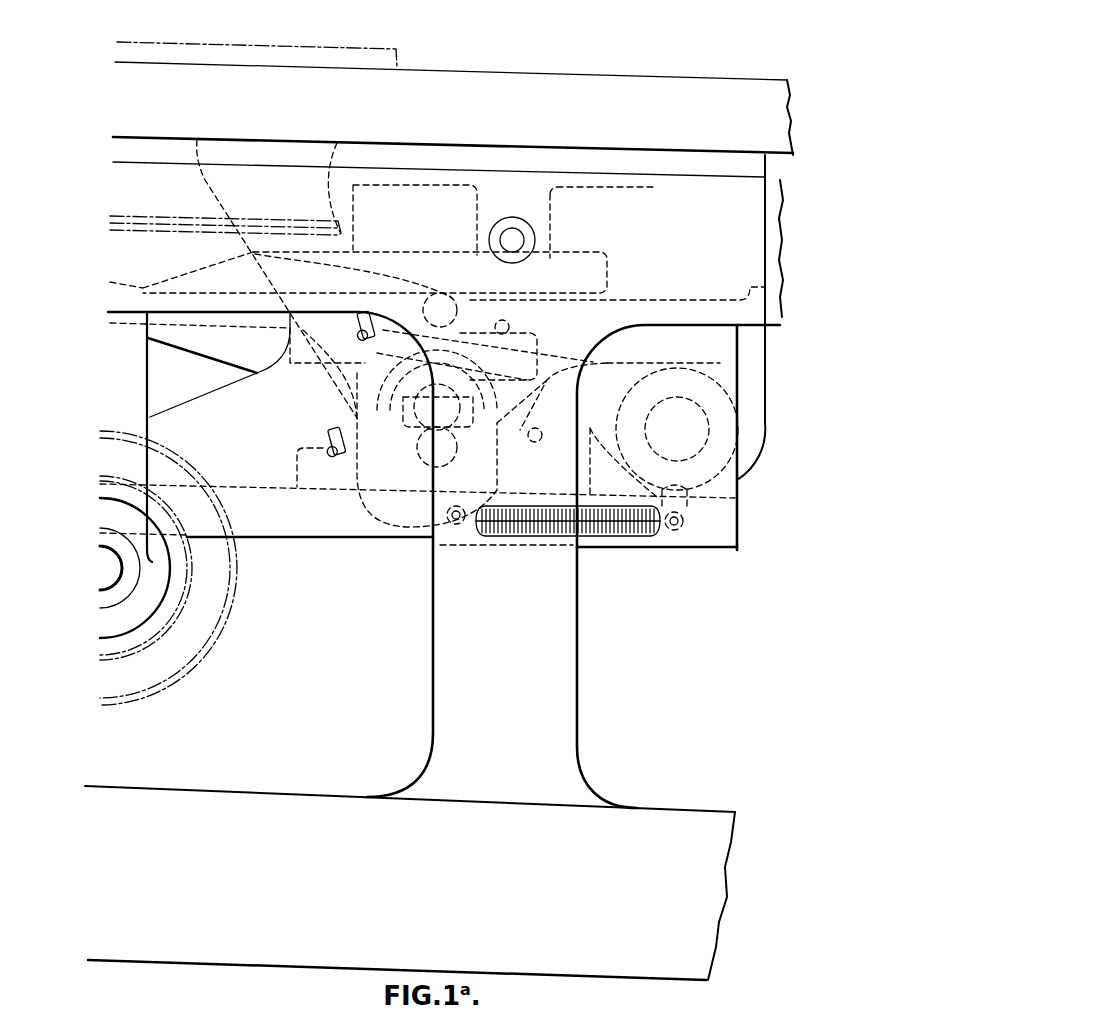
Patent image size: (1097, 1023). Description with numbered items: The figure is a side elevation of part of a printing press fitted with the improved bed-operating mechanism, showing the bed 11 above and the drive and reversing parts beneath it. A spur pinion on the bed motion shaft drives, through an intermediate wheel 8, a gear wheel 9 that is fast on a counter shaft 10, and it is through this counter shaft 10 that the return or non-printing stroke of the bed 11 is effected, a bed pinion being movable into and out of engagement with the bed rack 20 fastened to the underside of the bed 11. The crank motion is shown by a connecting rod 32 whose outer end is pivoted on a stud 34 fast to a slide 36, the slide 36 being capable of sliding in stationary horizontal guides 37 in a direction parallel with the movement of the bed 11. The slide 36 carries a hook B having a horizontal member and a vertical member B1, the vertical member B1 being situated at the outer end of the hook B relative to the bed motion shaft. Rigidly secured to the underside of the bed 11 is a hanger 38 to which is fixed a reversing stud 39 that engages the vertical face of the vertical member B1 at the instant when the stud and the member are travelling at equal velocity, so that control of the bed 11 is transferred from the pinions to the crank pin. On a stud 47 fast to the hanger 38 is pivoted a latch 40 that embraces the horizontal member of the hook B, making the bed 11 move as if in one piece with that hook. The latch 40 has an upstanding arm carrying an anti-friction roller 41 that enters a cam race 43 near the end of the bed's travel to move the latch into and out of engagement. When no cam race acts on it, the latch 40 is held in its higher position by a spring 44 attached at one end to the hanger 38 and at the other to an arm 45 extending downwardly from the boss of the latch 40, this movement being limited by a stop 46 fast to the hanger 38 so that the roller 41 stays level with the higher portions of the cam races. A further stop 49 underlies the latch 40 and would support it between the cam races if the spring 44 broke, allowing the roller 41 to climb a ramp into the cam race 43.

The bed 11 is at (123, 82).
The bed rack 20 is at (137, 219).
The cam race 43 is at (380, 267).
The anti-friction roller 41 is at (440, 306).
The stop 46 is at (508, 323).
The latch 40 is at (607, 362).
The hanger 38 is at (766, 398).
The stud 47 is at (707, 451).
The slide 36 is at (538, 382).
The intermediate wheel 8 is at (130, 380).
The connecting rod 32 is at (213, 366).
The hook B is at (407, 417).
The vertical member B1 is at (466, 432).
The stop 49 is at (536, 443).
The horizontal guides 37 is at (292, 524).
The stud 34 is at (423, 461).
The reversing stud 39 is at (458, 473).
The spring 44 is at (613, 534).
The arm 45 is at (687, 509).
The gear wheel 9 is at (162, 634).
The counter shaft 10 is at (101, 570).